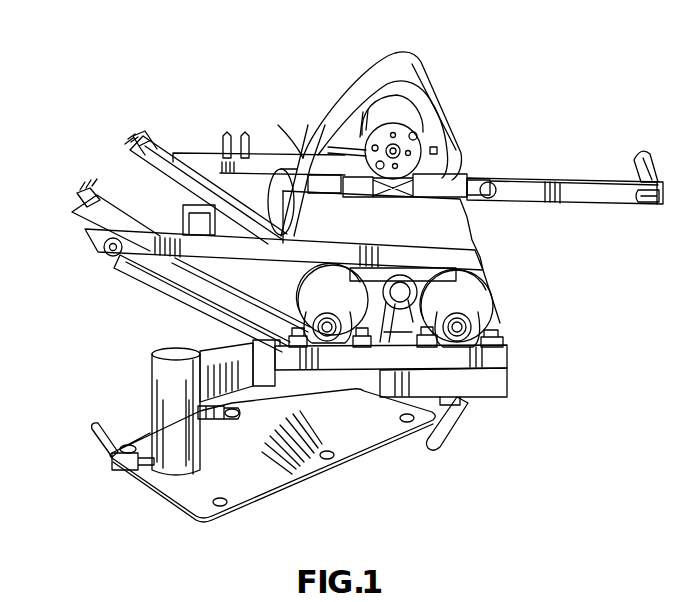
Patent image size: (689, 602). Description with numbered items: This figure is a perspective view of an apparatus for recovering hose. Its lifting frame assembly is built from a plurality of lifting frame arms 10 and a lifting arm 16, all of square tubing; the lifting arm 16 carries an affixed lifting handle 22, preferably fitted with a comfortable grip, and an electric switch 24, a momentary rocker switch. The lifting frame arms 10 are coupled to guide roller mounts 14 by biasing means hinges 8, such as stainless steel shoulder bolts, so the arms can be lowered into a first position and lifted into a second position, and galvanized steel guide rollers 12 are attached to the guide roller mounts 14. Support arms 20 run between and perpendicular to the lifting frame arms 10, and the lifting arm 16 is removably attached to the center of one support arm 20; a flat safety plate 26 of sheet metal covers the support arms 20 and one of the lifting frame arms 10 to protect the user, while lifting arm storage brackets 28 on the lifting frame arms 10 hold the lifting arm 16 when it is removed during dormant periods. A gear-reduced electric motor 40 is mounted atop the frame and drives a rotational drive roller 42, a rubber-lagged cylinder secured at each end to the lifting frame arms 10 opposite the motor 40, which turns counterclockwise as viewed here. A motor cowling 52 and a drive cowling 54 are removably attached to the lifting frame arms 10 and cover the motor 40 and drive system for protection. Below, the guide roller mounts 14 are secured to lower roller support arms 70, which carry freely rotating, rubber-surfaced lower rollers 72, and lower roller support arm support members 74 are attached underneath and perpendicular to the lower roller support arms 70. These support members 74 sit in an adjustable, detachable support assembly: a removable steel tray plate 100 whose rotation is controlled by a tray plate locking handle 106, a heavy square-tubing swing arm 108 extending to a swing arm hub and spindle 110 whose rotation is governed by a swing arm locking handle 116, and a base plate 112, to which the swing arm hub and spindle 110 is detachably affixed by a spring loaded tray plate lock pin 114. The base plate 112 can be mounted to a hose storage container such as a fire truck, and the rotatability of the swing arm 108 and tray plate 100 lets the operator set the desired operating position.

The biasing means hinge 8 is at (104, 252).
The lifting frame arm 10 is at (178, 152).
The guide roller 12 is at (157, 150).
The guide roller mount 14 is at (143, 128).
The lifting arm 16 is at (567, 177).
The support arm 20 is at (283, 168).
The lifting handle 22 is at (650, 150).
The electric switch 24 is at (651, 203).
The flat safety plate 26 is at (467, 233).
The lifting arm storage bracket 28 is at (226, 148).
The motor 40 is at (453, 117).
The rotational drive roller 42 is at (433, 294).
The motor cowling 52 is at (435, 57).
The drive cowling 54 is at (303, 135).
The lower roller support arm 70 is at (257, 350).
The lower roller 72 is at (300, 293).
The lower roller support arm support member 74 is at (470, 350).
The tray plate 100 is at (510, 393).
The tray plate locking handle 106 is at (460, 428).
The swing arm 108 is at (196, 385).
The swing arm hub and spindle 110 is at (164, 352).
The base plate 112 is at (280, 483).
The spring loaded tray plate lock pin 114 is at (212, 422).
The swing arm locking handle 116 is at (95, 428).